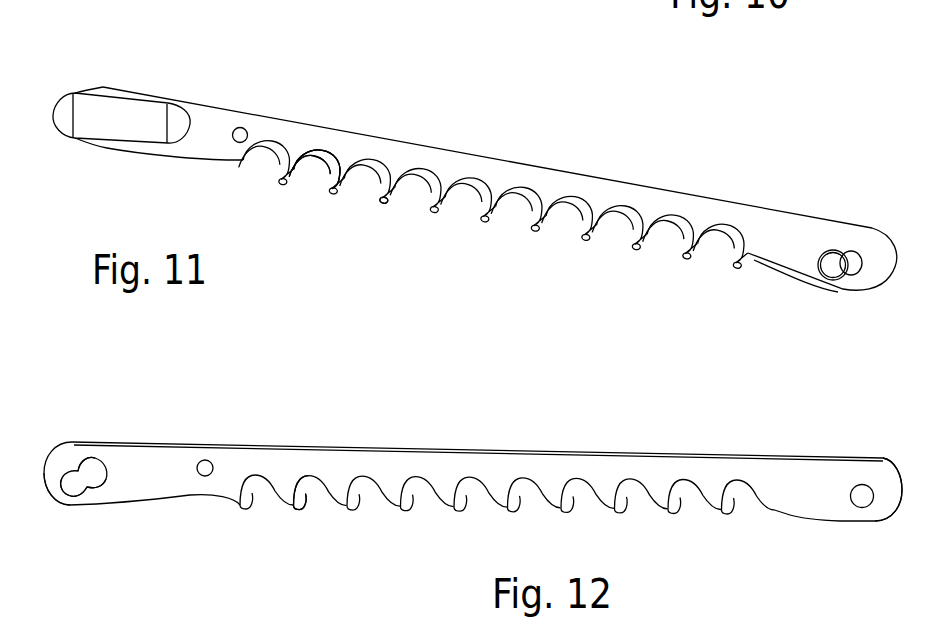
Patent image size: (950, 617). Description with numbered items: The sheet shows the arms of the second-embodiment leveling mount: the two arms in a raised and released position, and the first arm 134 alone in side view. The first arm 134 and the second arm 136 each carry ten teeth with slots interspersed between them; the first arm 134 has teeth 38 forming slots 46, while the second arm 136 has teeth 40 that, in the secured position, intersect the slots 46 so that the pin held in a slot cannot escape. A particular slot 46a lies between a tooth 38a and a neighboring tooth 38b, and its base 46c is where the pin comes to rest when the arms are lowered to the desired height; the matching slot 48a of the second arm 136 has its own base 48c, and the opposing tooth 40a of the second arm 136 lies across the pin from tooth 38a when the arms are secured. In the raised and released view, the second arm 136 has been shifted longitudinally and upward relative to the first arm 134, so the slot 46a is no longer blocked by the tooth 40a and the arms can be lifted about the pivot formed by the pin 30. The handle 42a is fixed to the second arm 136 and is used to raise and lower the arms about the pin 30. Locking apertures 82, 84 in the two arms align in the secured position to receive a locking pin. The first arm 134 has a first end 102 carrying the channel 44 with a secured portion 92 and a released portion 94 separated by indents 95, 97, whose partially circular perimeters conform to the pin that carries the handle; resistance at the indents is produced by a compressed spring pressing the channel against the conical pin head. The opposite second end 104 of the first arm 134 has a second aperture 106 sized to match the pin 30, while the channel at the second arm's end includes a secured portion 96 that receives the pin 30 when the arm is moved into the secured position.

In FIG. 11, the first arm 134 is at (102, 85).
In FIG. 12, the first arm 134 is at (205, 398).
In FIG. 11, the handle 42a is at (142, 105).
In FIG. 11, the second arm 136 is at (210, 120).
In FIG. 11, the locking aperture 84 is at (250, 127).
In FIG. 11, the slot 48a is at (337, 153).
In FIG. 11, the base of slot 48c is at (343, 160).
In FIG. 11, the slots 46 is at (372, 178).
In FIG. 12, the slots 46 is at (328, 498).
In FIG. 11, the pin 30 is at (825, 250).
In FIG. 11, the secured portion 96 is at (857, 250).
In FIG. 11, the teeth 40 is at (300, 163).
In FIG. 11, the tooth 38a is at (310, 180).
In FIG. 11, the slot 46a is at (328, 173).
In FIG. 12, the slot 46a is at (315, 488).
In FIG. 11, the tooth 40a is at (350, 175).
In FIG. 11, the tooth 38b is at (366, 196).
In FIG. 12, the channel 44 is at (77, 446).
In FIG. 12, the indent 95 is at (78, 464).
In FIG. 12, the locking aperture 82 is at (200, 460).
In FIG. 12, the base of slot 46c is at (297, 478).
In FIG. 12, the second aperture 106 is at (855, 484).
In FIG. 12, the second end 104 is at (892, 452).
In FIG. 12, the first end 102 is at (50, 500).
In FIG. 12, the released portion 94 is at (78, 495).
In FIG. 12, the indent 97 is at (89, 494).
In FIG. 12, the secured portion 92 is at (102, 490).
In FIG. 12, the teeth 38 is at (247, 503).